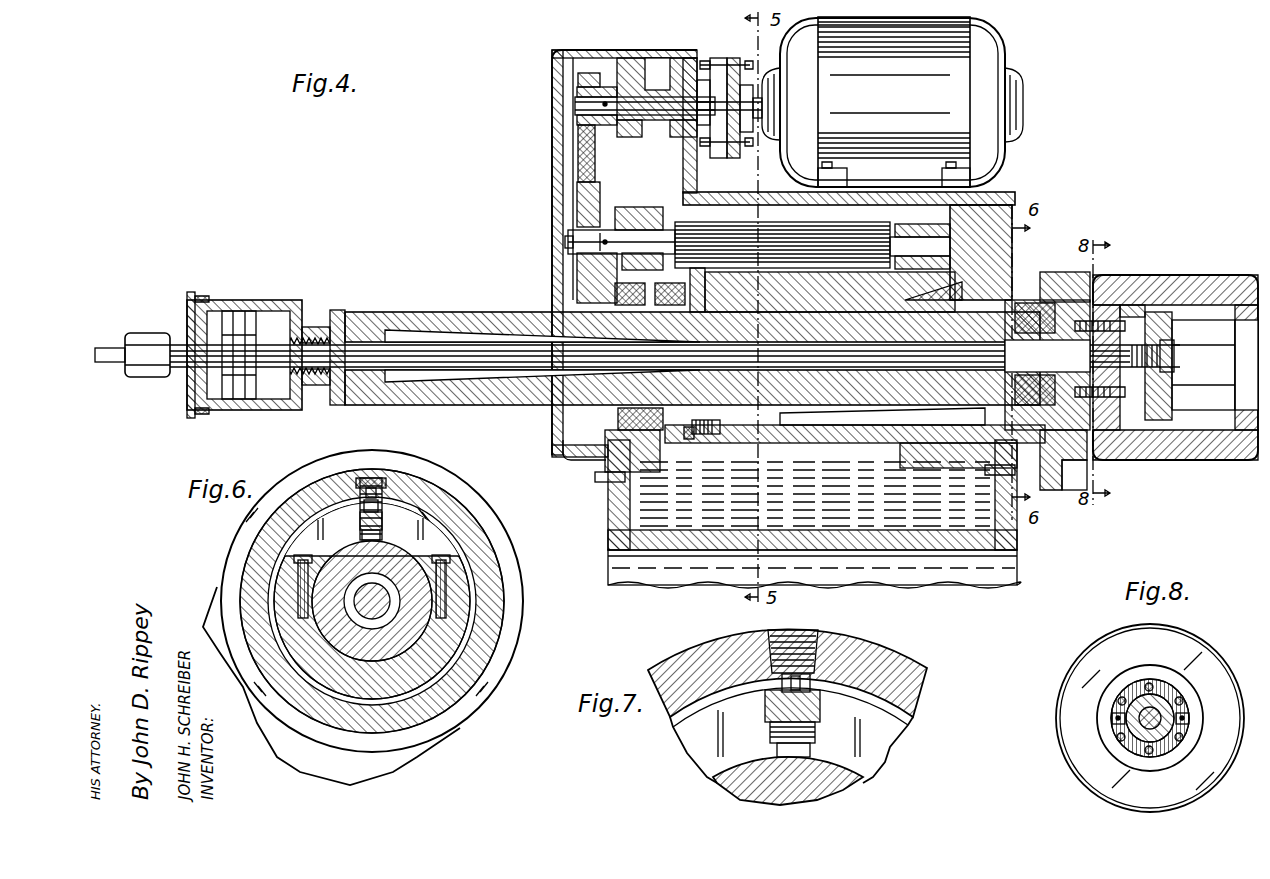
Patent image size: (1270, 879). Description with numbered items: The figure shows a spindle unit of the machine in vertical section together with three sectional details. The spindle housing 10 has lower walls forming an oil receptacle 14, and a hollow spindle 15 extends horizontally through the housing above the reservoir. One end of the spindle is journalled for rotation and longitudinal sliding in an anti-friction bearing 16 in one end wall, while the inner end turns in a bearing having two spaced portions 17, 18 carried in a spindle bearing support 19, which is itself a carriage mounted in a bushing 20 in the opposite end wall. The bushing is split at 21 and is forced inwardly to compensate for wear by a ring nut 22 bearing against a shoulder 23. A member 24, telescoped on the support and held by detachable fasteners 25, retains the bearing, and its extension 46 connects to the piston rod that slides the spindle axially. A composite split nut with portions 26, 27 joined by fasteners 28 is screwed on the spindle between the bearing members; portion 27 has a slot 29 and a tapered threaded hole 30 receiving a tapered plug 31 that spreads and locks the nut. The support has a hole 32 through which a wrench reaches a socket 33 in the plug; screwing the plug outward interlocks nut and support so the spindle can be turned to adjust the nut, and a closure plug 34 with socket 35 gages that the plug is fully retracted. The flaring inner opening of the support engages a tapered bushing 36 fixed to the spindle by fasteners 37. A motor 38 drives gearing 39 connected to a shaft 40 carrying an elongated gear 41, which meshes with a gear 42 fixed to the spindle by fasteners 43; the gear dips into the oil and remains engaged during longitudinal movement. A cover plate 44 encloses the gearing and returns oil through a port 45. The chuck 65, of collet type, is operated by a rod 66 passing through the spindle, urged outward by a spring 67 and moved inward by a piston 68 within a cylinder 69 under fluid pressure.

In FIG. 4, the spindle housing 10 is at (618, 525).
In FIG. 4, the oil receptacle 14 is at (910, 530).
In FIG. 4, the hollow spindle 15 is at (476, 312).
In FIG. 6, the hollow spindle 15 is at (455, 655).
In FIG. 7, the hollow spindle 15 is at (850, 795).
In FIG. 4, the anti-friction bearing 16 is at (618, 415).
In FIG. 4, the bearing portion 17 is at (1132, 317).
In FIG. 4, the bearing portion 18 is at (985, 415).
In FIG. 4, the spindle bearing support 19 is at (858, 443).
In FIG. 6, the spindle bearing support 19 is at (448, 700).
In FIG. 7, the spindle bearing support 19 is at (900, 680).
In FIG. 4, the bushing 20 is at (980, 470).
In FIG. 4, the split 21 is at (1018, 250).
In FIG. 4, the ring nut 22 is at (1000, 290).
In FIG. 4, the shoulder 23 is at (1000, 475).
In FIG. 4, the member 24 is at (1068, 272).
In FIG. 6, the member 24 is at (512, 612).
In FIG. 4, the detachable fasteners 25 is at (1115, 300).
In FIG. 4, the split nut portion 26 is at (1030, 435).
In FIG. 6, the split nut portion 26 is at (440, 633).
In FIG. 6, the split nut portion 27 is at (470, 565).
In FIG. 7, the split nut portion 27 is at (693, 766).
In FIG. 6, the detachable fasteners 28 is at (445, 578).
In FIG. 6, the slot 29 is at (410, 520).
In FIG. 7, the slot 29 is at (875, 750).
In FIG. 6, the tapered threaded hole 30 is at (362, 530).
In FIG. 7, the tapered threaded hole 30 is at (770, 738).
In FIG. 6, the tapered plug 31 is at (390, 505).
In FIG. 7, the tapered plug 31 is at (765, 712).
In FIG. 6, the hole 32 is at (378, 520).
In FIG. 7, the hole 32 is at (820, 650).
In FIG. 6, the socket 33 is at (364, 510).
In FIG. 7, the socket 33 is at (802, 683).
In FIG. 6, the plug 34 is at (372, 480).
In FIG. 6, the socket 35 is at (372, 482).
In FIG. 4, the tapered bushing 36 is at (768, 300).
In FIG. 4, the detachable fasteners 37 is at (704, 436).
In FIG. 4, the motor 38 is at (985, 52).
In FIG. 4, the gearing 39 is at (578, 150).
In FIG. 4, the shaft 40 is at (625, 230).
In FIG. 4, the elongated gear 41 is at (862, 235).
In FIG. 4, the gear 42 is at (689, 440).
In FIG. 4, the removable fasteners 43 is at (698, 268).
In FIG. 4, the cover plate 44 is at (556, 172).
In FIG. 4, the port 45 is at (640, 455).
In FIG. 4, the extension 46 is at (1078, 492).
In FIG. 4, the chuck 65 is at (1208, 318).
In FIG. 8, the chuck 65 is at (1062, 733).
In FIG. 4, the rod 66 is at (420, 350).
In FIG. 6, the rod 66 is at (373, 618).
In FIG. 8, the rod 66 is at (1130, 735).
In FIG. 4, the spring 67 is at (308, 330).
In FIG. 4, the piston 68 is at (243, 318).
In FIG. 4, the cylinder 69 is at (225, 304).